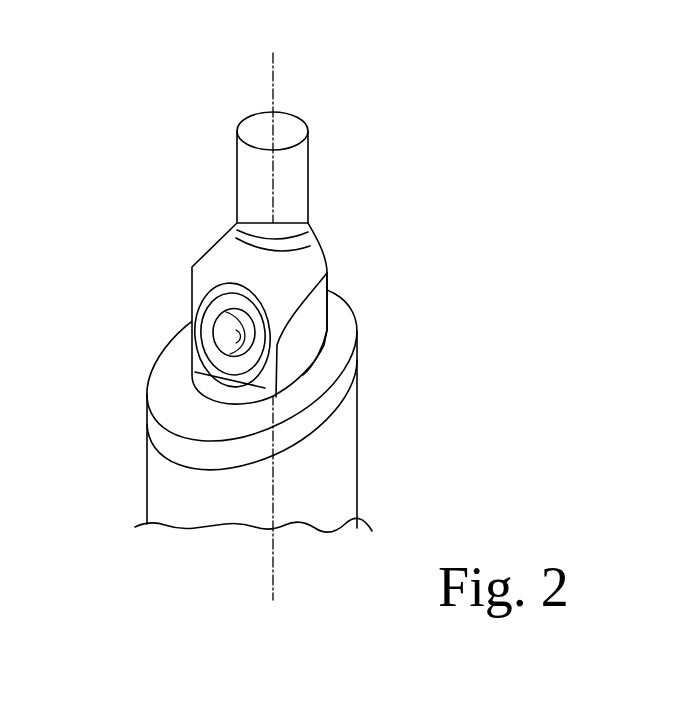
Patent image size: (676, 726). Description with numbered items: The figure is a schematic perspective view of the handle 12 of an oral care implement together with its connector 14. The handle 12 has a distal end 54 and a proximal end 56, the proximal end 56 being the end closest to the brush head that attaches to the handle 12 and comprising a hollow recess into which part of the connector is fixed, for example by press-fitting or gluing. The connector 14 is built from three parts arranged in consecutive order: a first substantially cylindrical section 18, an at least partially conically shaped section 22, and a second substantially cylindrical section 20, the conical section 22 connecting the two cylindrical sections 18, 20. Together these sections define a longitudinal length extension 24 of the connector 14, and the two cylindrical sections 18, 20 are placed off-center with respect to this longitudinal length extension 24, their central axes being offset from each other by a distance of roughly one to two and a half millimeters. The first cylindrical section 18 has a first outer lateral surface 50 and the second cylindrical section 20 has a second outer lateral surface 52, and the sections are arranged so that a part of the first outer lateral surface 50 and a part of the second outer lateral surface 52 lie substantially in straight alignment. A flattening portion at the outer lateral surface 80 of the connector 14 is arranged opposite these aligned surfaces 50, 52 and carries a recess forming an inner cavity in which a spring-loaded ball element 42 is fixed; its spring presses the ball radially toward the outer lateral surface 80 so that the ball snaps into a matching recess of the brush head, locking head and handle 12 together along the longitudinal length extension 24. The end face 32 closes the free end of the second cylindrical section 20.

The handle 12 is at (268, 392).
The connector 14 is at (256, 224).
The first substantially cylindrical section 18 is at (308, 320).
The second substantially cylindrical section 20 is at (280, 133).
The at least partially conically shaped section 22 is at (251, 295).
The longitudinal length extension 24 is at (274, 73).
The end face 32 is at (259, 135).
The spring-loaded ball element 42 is at (226, 332).
The first outer lateral surface 50 is at (193, 308).
The second outer lateral surface 52 is at (238, 178).
The distal end 54 is at (136, 521).
The proximal end 56 is at (361, 373).
The outer lateral surface 80 is at (325, 268).